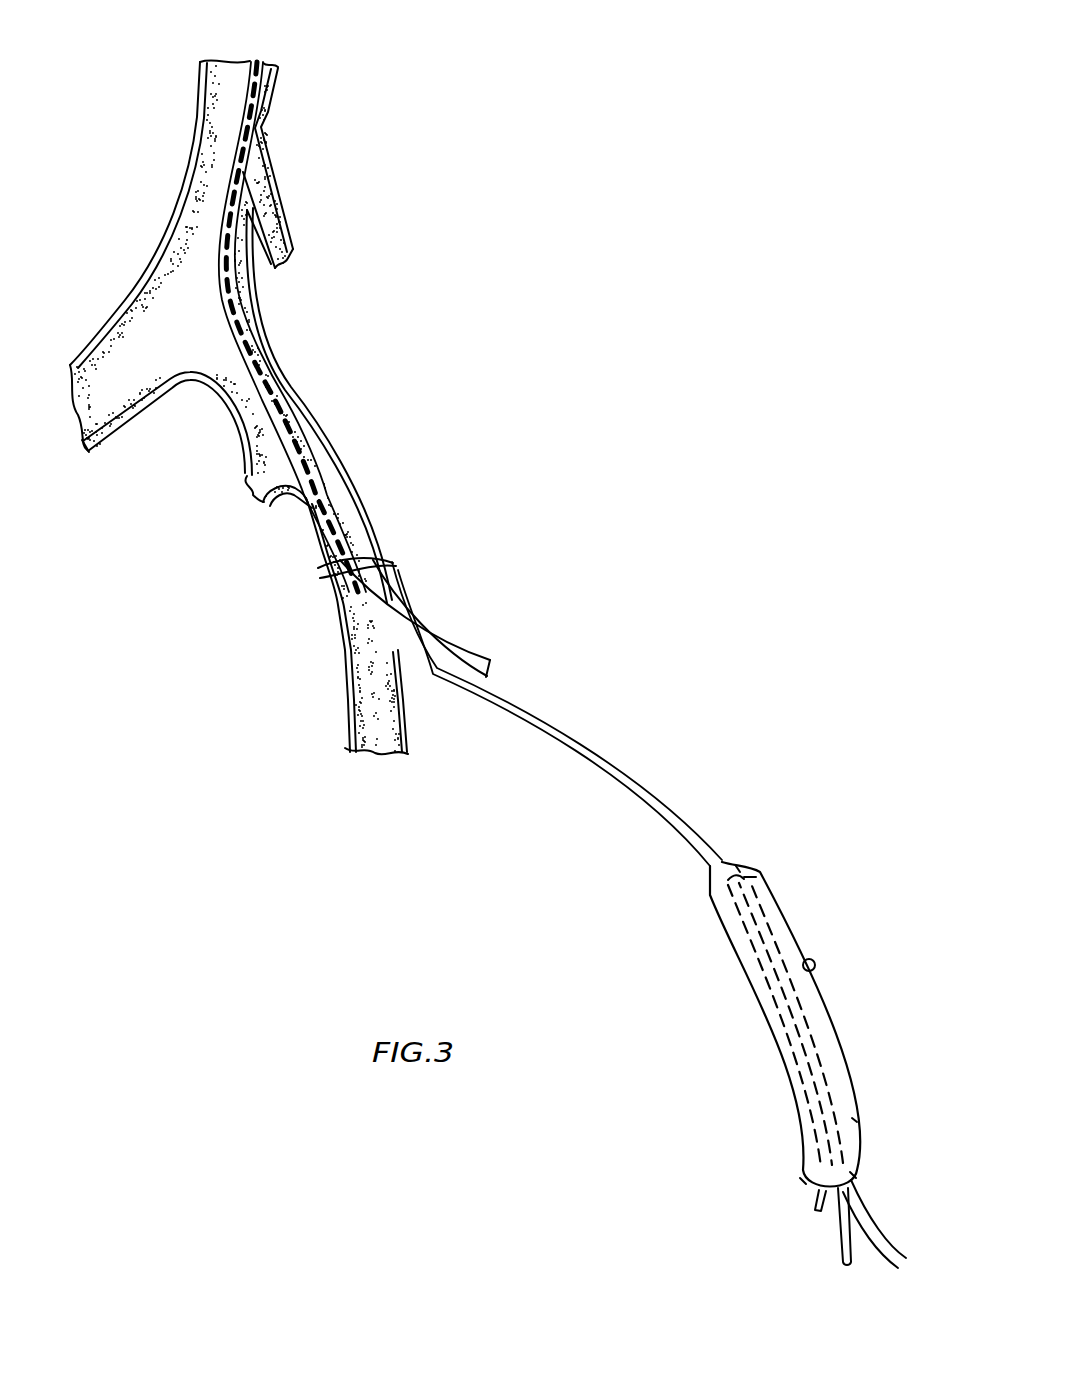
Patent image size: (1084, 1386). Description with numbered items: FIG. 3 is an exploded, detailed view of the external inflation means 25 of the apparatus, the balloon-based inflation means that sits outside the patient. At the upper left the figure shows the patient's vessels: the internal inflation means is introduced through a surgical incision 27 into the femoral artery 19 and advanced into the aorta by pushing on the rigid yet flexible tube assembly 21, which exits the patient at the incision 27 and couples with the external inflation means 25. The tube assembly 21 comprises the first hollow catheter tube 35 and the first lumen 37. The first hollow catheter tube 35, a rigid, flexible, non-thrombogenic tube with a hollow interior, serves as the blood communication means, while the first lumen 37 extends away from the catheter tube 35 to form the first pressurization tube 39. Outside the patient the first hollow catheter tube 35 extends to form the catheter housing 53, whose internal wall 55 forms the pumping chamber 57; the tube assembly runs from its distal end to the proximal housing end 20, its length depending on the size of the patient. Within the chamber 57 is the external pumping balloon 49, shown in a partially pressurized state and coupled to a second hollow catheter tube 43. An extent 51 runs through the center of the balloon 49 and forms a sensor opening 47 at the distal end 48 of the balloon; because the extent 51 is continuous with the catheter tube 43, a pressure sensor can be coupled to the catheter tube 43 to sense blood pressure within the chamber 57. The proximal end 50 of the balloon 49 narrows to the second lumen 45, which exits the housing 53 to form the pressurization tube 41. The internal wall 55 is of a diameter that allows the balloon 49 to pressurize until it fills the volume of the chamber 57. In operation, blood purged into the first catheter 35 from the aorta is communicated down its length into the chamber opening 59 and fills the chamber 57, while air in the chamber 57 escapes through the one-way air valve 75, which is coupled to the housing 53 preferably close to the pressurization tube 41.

The femoral artery 19 is at (306, 498).
The proximal housing end 20 is at (700, 873).
The tube assembly 21 is at (252, 152).
The external inflation means 25 is at (885, 1096).
The surgical incision 27 is at (390, 562).
The first hollow catheter tube 35 is at (252, 60).
The first lumen 37 is at (247, 89).
The first pressurization tube 39 is at (472, 657).
The pressurization tube 41 is at (878, 1240).
The second hollow catheter tube 43 is at (840, 1249).
The second lumen 45 is at (855, 1178).
The sensor opening 47 is at (740, 868).
The distal end 48 is at (750, 877).
The external pumping balloon 49 is at (792, 1050).
The proximal end 50 is at (805, 1184).
The extent 51 is at (775, 985).
The catheter housing 53 is at (765, 1030).
The internal wall 55 is at (815, 970).
The pumping chamber 57 is at (855, 1120).
The chamber opening 59 is at (724, 858).
The one-way air valve 75 is at (812, 1203).